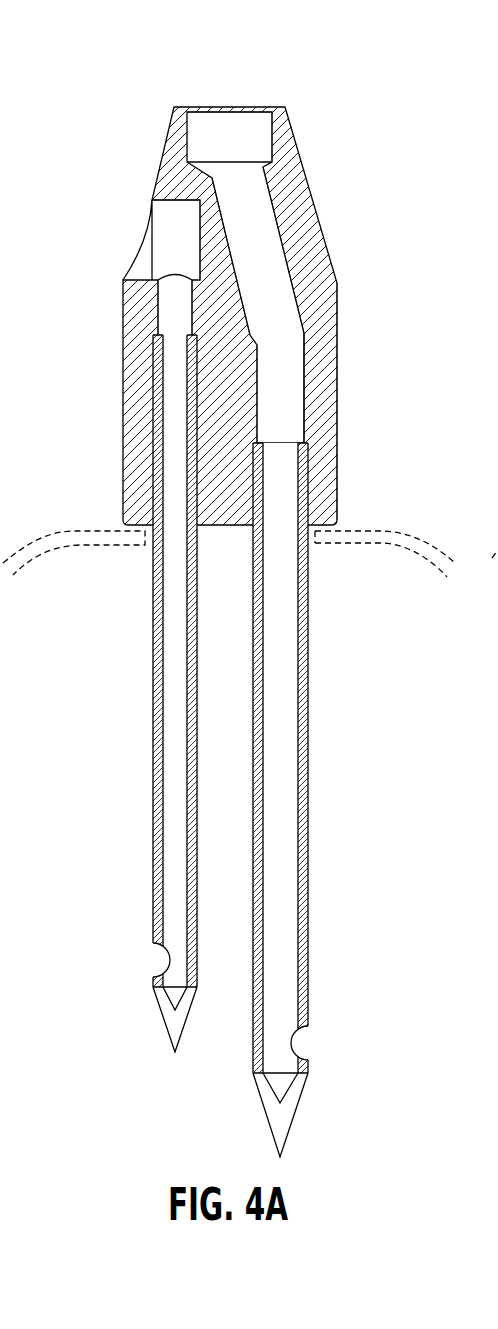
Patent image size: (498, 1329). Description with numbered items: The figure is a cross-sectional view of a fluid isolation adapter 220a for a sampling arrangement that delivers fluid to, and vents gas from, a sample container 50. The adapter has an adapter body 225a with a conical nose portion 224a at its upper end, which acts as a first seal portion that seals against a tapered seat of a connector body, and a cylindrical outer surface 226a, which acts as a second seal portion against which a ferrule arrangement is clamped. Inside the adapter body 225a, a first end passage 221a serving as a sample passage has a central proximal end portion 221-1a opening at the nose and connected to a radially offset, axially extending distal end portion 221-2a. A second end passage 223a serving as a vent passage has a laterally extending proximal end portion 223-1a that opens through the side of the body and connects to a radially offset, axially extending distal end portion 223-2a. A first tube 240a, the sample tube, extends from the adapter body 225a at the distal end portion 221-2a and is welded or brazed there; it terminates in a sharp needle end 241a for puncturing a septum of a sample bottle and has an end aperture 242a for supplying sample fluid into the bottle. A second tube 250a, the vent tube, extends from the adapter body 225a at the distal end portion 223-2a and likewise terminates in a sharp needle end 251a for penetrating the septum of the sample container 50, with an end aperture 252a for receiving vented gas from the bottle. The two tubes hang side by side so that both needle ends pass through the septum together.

The fluid isolation adapter 220a is at (394, 175).
The first end passage 221a is at (264, 264).
The central proximal end portion 221-1a is at (190, 137).
The axially extending distal end portion 221-2a is at (250, 432).
The second end passage 223a is at (168, 313).
The laterally extending proximal end portion 223-1a is at (152, 280).
The axially extending distal end portion 223-2a is at (178, 424).
The conical nose portion 224a is at (188, 137).
The adapter body 225a is at (320, 392).
The cylindrical outer surface 226a is at (337, 332).
The first tube 240a is at (343, 800).
The sharp needle end 241a is at (290, 1118).
The end aperture 242a is at (292, 1039).
The second tube 250a is at (117, 736).
The sharp needle end 251a is at (170, 1040).
The end aperture 252a is at (166, 953).
The sample container 50 is at (40, 553).